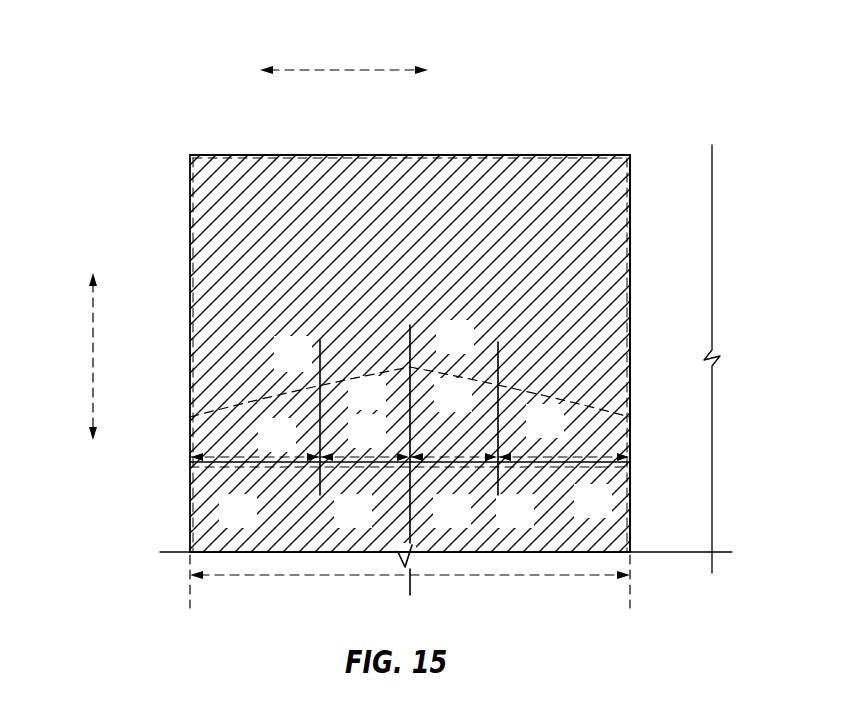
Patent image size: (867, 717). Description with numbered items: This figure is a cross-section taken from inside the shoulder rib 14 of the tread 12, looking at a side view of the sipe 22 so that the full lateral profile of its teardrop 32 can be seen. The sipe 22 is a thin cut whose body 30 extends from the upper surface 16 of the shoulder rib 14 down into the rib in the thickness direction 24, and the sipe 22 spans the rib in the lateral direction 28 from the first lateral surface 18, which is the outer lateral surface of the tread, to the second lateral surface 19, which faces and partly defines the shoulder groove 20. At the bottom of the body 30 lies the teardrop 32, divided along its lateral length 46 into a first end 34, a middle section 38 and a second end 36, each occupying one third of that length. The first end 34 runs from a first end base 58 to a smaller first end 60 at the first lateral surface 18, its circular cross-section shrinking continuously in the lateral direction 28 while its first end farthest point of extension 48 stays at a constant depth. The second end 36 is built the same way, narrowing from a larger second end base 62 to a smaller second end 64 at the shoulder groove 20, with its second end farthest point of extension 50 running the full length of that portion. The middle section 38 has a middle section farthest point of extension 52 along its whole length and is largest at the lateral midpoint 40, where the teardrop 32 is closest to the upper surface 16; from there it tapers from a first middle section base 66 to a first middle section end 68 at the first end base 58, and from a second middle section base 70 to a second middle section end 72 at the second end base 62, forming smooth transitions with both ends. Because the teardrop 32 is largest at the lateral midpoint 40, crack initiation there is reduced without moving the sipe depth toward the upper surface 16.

The tread 12 is at (708, 66).
The shoulder rib 14 is at (203, 208).
The upper surface 16 is at (224, 150).
The first lateral surface 18 is at (190, 272).
The second lateral surface 19 is at (630, 238).
The shoulder groove 20 is at (650, 148).
The sipe 22 is at (467, 155).
The thickness direction 24 is at (92, 355).
The lateral direction 28 is at (328, 70).
The body 30 is at (613, 318).
The teardrop 32 is at (575, 452).
The first end 34 is at (190, 458).
The second end 36 is at (630, 430).
The middle section 38 is at (372, 470).
The lateral midpoint 40 is at (410, 342).
The lateral length 46 is at (312, 575).
The first end farthest point of extension 48 is at (255, 470).
The second end farthest point of extension 50 is at (535, 470).
The middle section farthest point of extension 52 is at (470, 470).
The first end base 58 is at (320, 405).
The first end 60 is at (190, 437).
The second end base 62 is at (498, 410).
The second end 64 is at (630, 452).
The first middle section base 66 is at (410, 448).
The first middle section end 68 is at (320, 450).
The second middle section base 70 is at (410, 385).
The second middle section end 72 is at (498, 440).